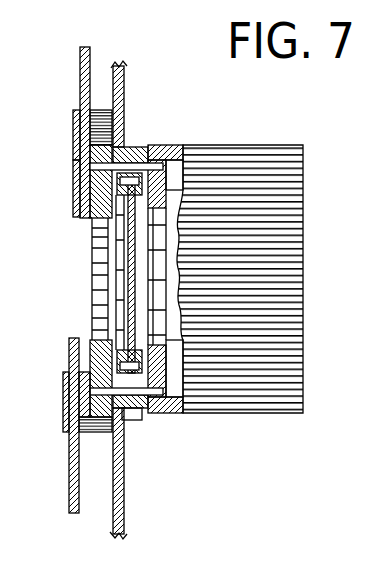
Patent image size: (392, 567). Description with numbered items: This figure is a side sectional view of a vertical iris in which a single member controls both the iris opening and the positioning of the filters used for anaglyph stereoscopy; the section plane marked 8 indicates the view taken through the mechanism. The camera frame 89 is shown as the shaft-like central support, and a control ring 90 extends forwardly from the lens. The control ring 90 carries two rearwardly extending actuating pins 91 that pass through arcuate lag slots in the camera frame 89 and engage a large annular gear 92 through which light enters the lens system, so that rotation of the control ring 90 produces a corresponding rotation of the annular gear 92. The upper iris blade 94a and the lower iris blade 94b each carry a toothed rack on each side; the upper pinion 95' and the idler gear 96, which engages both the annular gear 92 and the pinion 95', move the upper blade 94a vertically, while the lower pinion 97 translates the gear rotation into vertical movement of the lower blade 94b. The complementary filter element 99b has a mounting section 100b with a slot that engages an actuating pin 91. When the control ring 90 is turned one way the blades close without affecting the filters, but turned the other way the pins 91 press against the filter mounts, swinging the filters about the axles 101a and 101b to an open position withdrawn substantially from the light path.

The section line 8- 8 is at (145, 140).
The camera frame 89 is at (121, 508).
The control ring 90 is at (277, 400).
The actuating pin 91 is at (153, 164).
The annular gear 92 is at (96, 220).
The upper iris blade 94a is at (80, 72).
The lower iris blade 94b is at (69, 473).
The upper pinion 95' is at (62, 135).
The idler gear 96 is at (73, 183).
The lower pinion 97 is at (65, 400).
The complementary filter element 99b is at (132, 241).
The filter mounting section 100b is at (133, 406).
The filter axle 101a is at (140, 194).
The filter axle 101b is at (142, 357).